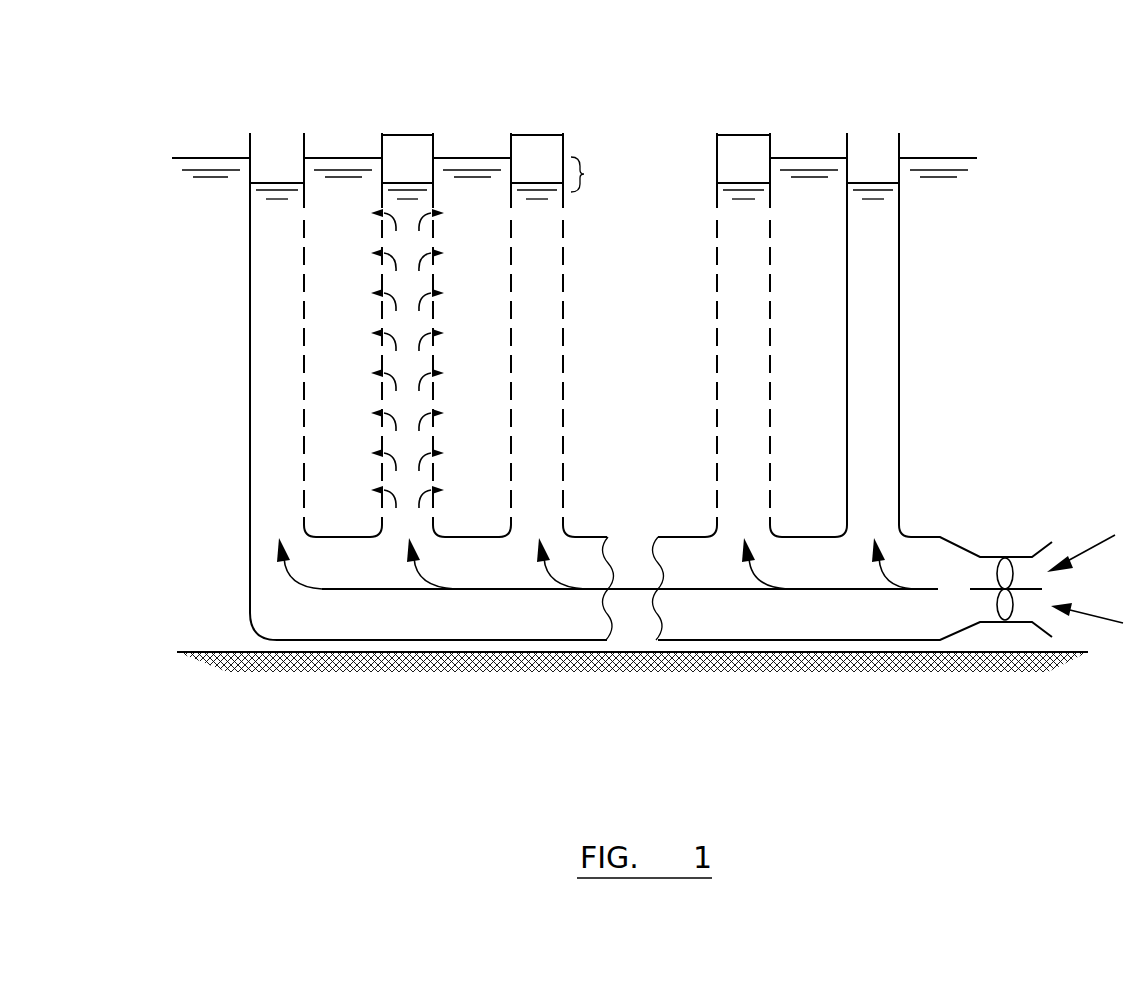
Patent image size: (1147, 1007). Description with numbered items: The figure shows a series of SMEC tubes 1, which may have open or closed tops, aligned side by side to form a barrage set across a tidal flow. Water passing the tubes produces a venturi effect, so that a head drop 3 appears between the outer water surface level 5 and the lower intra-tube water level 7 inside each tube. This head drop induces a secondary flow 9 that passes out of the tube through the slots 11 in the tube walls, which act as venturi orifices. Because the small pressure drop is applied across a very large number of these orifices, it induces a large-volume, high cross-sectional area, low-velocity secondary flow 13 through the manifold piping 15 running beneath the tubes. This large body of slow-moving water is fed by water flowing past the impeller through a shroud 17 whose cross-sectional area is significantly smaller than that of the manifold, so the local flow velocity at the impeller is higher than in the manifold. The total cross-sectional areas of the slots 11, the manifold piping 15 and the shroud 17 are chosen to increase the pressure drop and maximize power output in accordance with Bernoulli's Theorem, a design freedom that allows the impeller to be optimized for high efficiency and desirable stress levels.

The SMEC tube 1 is at (275, 148).
The head drop 3 is at (587, 174).
The water surface level 5 is at (468, 157).
The intra-tube water level 7 is at (533, 183).
The secondary flow 9 is at (410, 245).
The slots 11 is at (290, 334).
The secondary flow 13 is at (497, 590).
The manifold piping 15 is at (362, 620).
The shroud 17 is at (1024, 582).